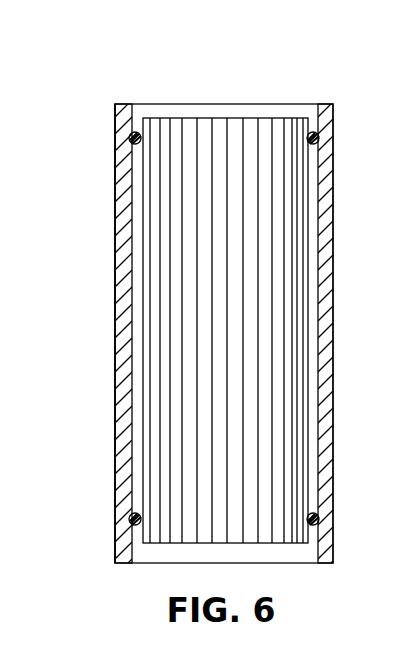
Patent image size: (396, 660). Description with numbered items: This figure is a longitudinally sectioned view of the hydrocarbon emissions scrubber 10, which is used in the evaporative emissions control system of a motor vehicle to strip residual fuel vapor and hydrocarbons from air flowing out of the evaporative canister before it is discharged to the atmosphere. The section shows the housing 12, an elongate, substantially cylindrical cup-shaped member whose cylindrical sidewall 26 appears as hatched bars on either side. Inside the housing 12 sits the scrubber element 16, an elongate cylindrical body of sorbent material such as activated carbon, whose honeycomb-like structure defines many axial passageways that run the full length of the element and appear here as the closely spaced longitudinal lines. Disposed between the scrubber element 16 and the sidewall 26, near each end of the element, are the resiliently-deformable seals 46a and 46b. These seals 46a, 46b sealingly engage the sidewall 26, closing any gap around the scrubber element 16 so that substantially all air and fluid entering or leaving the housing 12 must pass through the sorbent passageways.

The hydrocarbon emissions scrubber 10 is at (68, 128).
The housing 12 is at (110, 413).
The scrubber element 16 is at (290, 302).
The cylindrical sidewall 26 is at (115, 220).
The resiliently-deformable seal 46a is at (319, 135).
The resiliently-deformable seal 46b is at (319, 521).